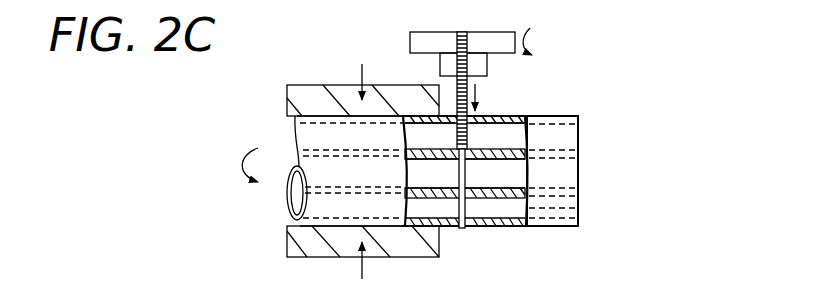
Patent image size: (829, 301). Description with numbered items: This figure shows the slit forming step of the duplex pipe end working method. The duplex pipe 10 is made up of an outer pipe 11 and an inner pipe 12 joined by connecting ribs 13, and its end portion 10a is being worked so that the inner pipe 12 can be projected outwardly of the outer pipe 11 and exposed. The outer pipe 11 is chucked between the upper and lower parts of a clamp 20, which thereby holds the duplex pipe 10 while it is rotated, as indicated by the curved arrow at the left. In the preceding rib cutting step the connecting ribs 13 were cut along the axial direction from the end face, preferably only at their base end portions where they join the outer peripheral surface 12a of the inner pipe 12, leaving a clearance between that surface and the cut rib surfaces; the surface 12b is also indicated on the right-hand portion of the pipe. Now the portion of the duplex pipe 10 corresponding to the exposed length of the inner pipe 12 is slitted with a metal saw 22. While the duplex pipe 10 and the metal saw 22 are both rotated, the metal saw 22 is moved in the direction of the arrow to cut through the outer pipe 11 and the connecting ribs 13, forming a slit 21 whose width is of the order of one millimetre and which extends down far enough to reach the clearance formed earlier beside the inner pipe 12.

The duplex pipe 10 is at (310, 136).
The end portion 10a is at (567, 115).
The outer pipe 11 is at (498, 118).
The inner pipe 12 is at (515, 228).
The outer peripheral surface 12a is at (527, 150).
The lower partition 12b is at (526, 168).
The connecting ribs 13 is at (478, 130).
The clamp 20 is at (312, 94).
The slit 21 is at (462, 231).
The metal saw 22 is at (460, 32).